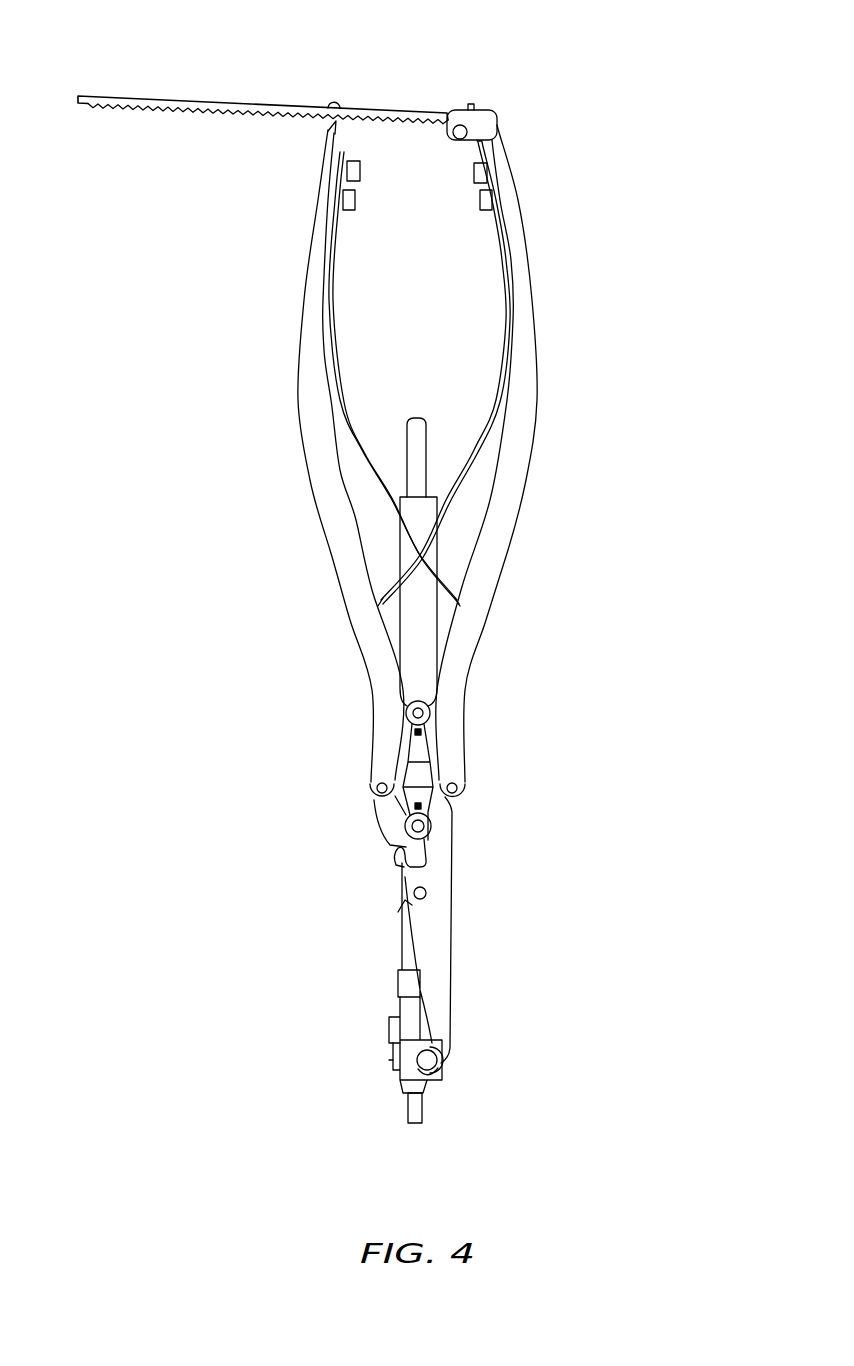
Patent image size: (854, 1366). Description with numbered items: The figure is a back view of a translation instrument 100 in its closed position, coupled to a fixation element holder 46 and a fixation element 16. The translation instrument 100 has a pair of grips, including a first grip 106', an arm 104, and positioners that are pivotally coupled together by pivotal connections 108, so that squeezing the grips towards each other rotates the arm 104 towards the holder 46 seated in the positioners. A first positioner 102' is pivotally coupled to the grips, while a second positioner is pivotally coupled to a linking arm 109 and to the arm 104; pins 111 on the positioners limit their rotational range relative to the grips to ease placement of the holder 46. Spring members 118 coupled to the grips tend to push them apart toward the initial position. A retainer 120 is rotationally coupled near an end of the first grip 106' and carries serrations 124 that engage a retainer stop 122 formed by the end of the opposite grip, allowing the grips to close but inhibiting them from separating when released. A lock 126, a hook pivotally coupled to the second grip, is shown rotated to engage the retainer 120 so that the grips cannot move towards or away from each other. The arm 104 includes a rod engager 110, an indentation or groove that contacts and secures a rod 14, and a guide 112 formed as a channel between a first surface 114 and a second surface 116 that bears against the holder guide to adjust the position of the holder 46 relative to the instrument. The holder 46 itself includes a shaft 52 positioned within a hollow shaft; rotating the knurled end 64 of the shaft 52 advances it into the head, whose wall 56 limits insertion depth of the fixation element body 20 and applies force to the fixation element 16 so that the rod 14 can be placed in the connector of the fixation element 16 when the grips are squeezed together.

The translation instrument 100 is at (624, 299).
The retainer 120 is at (217, 107).
The serrations 124 is at (168, 110).
The retainer stop 122 is at (334, 125).
The lock 126 is at (340, 100).
The first grip 106' is at (539, 460).
The spring members 118 is at (336, 360).
The end of the shaft 64 is at (415, 442).
The holder 46 is at (423, 615).
The pivotal connections 108 is at (421, 718).
The first positioner 102' is at (393, 768).
The pins 111 is at (417, 733).
The linking arm 109 is at (388, 815).
The arm 104 is at (445, 953).
The first surface 114 is at (395, 866).
The guide 112 is at (393, 889).
The second surface 116 is at (400, 908).
The shaft 52 is at (428, 894).
The wall 56 is at (395, 1030).
The body 20 is at (392, 1066).
The rod 14 is at (430, 1060).
The rod engager 110 is at (436, 1074).
The fixation element 16 is at (408, 1106).